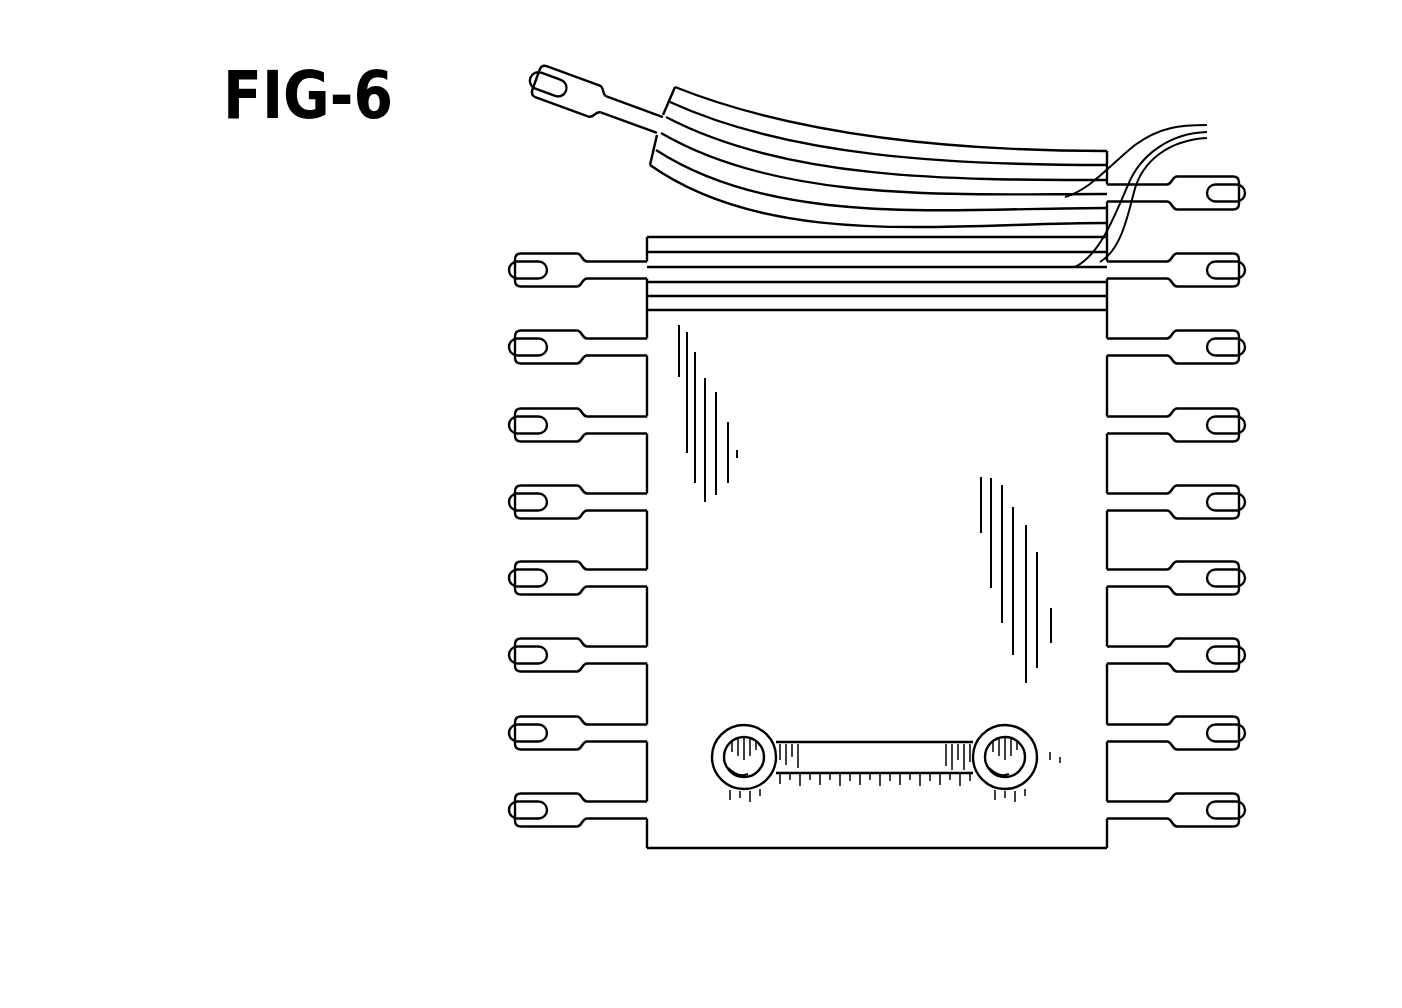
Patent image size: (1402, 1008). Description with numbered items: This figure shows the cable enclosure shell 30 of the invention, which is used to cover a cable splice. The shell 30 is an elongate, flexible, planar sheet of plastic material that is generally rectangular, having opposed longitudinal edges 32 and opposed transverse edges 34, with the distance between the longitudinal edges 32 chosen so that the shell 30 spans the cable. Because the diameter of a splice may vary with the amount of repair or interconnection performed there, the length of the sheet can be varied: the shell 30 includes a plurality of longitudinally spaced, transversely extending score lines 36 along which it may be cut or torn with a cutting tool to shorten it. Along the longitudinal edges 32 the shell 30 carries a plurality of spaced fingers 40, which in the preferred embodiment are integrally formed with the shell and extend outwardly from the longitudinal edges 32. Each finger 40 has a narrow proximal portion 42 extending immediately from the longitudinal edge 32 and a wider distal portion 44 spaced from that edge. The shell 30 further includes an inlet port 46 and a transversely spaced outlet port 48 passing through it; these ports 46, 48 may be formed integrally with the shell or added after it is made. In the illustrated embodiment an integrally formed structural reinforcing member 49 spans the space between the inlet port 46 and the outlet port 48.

The cable enclosure shell 30 is at (1290, 452).
The longitudinal edges 32 is at (648, 462).
The transverse edges 34 is at (1022, 150).
The score lines 36 is at (1154, 193).
The fingers 40 is at (597, 645).
The narrow proximal portion 42 is at (605, 810).
The wider distal portion 44 is at (562, 807).
The inlet port 46 is at (743, 775).
The outlet port 48 is at (1005, 775).
The structural reinforcing member 49 is at (832, 762).